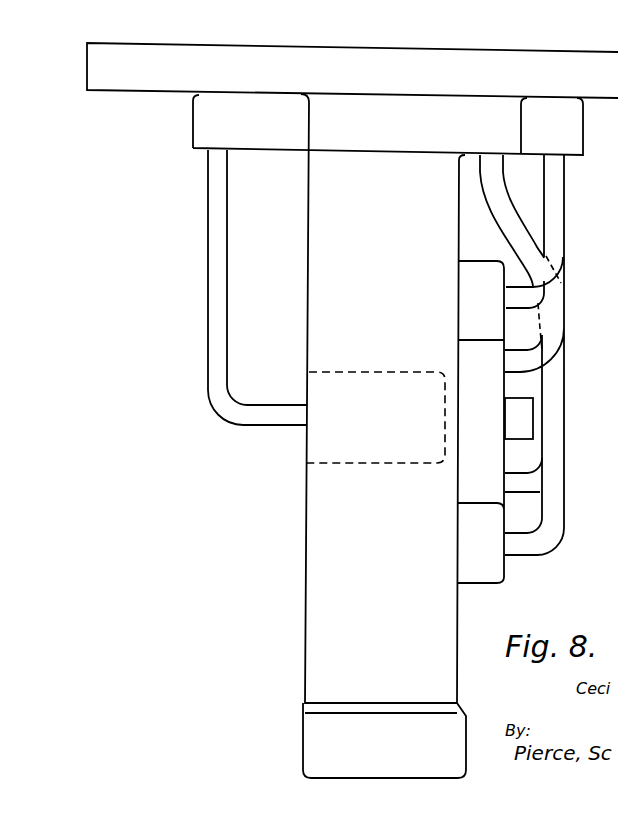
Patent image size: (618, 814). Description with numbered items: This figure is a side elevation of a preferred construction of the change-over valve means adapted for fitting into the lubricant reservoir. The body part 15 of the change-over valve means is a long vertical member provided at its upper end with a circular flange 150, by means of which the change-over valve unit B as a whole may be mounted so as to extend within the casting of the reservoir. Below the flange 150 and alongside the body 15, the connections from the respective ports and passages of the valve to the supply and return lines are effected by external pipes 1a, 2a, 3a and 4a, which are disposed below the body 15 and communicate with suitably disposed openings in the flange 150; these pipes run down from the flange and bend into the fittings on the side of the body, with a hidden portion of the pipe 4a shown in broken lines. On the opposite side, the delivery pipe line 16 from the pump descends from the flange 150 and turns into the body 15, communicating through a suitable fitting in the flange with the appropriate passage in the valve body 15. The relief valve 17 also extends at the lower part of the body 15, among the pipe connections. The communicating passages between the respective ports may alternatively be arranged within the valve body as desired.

The circular flange 150 is at (399, 60).
The delivery pipe line 16 is at (218, 382).
The body part 15 is at (318, 520).
The change-over valve unit B is at (296, 596).
The external pipe 4a is at (558, 268).
The external pipe 2a is at (528, 297).
The relief valve 17 is at (527, 410).
The external pipe 1a is at (525, 490).
The external pipe 3a is at (548, 522).